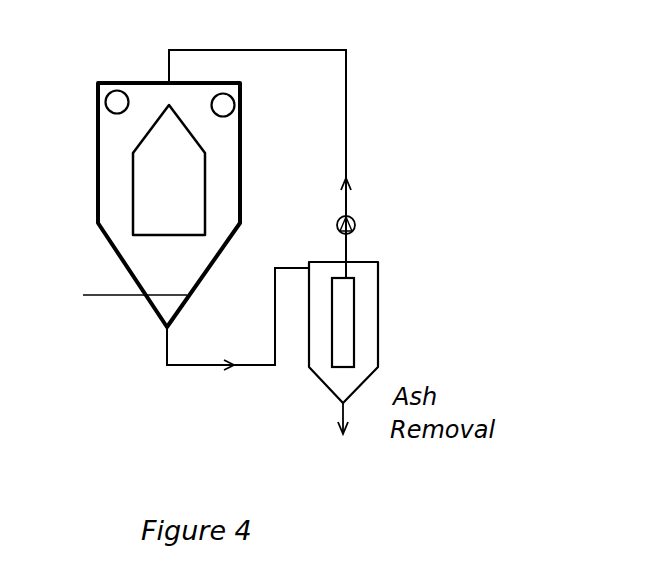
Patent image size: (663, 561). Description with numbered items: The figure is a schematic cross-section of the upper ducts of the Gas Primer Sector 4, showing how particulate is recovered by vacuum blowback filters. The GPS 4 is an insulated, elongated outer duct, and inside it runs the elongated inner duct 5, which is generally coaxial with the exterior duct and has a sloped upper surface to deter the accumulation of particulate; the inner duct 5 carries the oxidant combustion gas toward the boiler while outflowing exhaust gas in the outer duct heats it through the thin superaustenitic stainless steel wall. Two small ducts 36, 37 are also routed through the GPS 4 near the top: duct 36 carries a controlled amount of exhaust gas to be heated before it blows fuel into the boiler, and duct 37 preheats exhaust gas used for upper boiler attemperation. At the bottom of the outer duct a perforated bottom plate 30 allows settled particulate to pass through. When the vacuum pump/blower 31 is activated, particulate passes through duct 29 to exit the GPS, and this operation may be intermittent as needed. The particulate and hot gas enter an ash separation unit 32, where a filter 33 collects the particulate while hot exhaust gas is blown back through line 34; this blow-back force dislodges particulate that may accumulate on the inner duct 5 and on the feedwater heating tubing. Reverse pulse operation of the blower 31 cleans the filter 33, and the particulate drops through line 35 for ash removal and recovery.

The Gas Primer Sector 4 is at (98, 178).
The inner duct 5 is at (169, 170).
The duct 29 is at (203, 367).
The bottom plate 30 is at (121, 296).
The vacuum pump/blower 31 is at (329, 226).
The ash separation unit 32 is at (360, 258).
The filter 33 is at (355, 320).
The blow-back line 34 is at (346, 162).
The particulate recovery line 35 is at (339, 435).
The duct 36 is at (110, 102).
The duct 37 is at (228, 103).